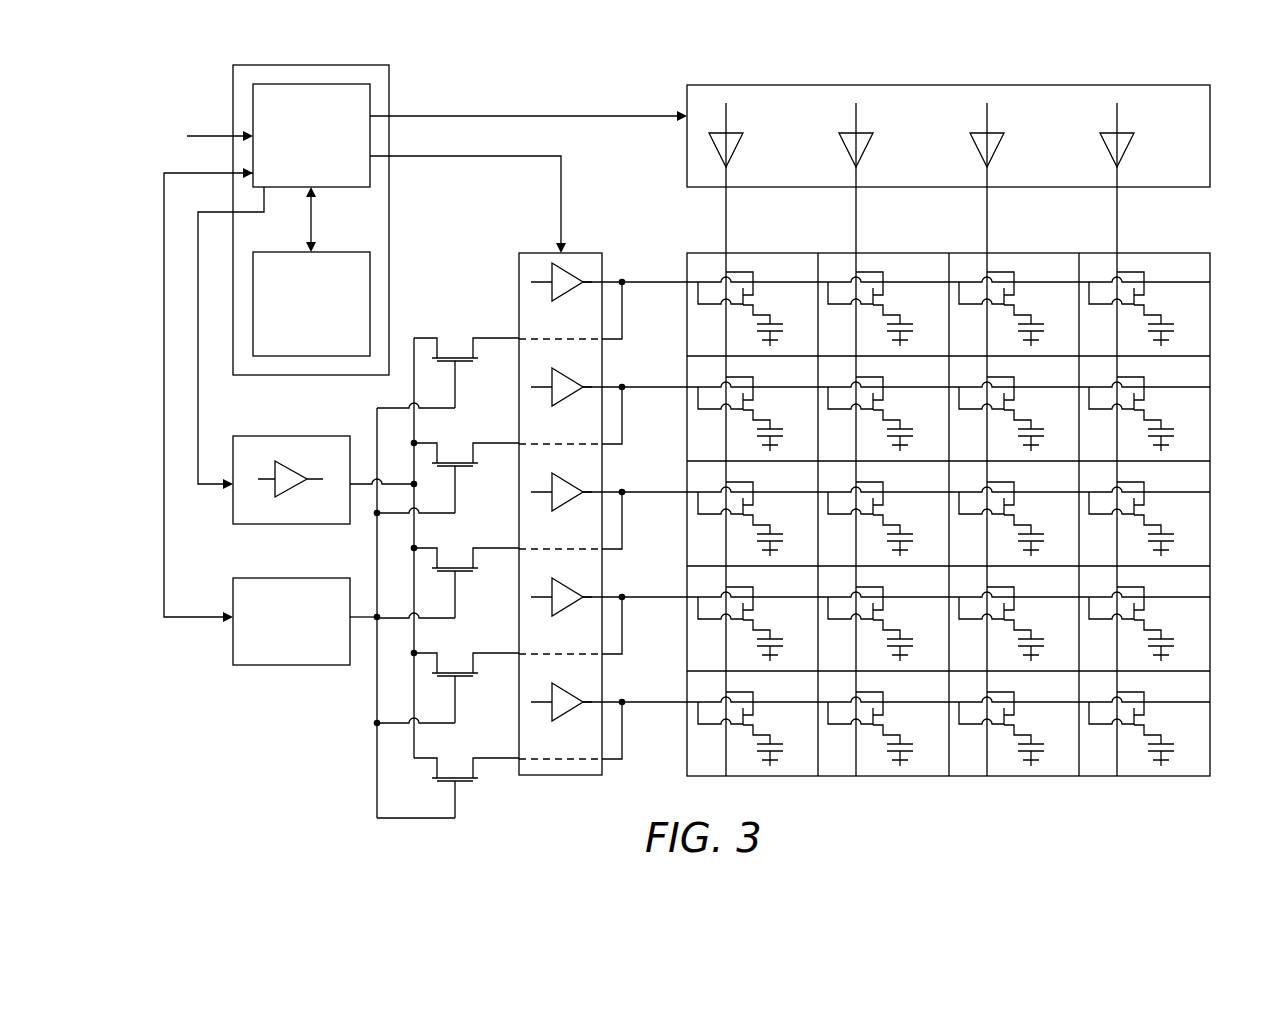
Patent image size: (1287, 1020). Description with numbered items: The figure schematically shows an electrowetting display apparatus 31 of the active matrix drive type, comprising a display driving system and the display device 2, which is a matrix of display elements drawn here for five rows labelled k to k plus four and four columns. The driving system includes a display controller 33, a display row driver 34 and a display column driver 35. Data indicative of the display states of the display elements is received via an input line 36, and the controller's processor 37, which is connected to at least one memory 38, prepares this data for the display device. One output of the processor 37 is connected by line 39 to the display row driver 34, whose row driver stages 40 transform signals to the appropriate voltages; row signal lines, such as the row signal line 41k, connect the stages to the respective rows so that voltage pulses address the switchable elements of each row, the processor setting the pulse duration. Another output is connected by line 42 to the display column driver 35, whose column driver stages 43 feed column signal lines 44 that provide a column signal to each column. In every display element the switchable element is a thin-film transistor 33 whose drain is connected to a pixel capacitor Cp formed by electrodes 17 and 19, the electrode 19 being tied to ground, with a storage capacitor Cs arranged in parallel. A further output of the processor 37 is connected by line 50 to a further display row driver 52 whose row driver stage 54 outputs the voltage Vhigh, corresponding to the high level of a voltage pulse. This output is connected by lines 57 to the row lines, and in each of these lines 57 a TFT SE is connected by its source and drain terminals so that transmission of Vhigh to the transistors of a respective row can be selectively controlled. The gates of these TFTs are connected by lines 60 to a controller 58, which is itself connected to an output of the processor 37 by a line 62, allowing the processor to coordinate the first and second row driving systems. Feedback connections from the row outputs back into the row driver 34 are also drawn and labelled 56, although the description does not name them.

The display device 2 is at (1210, 262).
The electrode 17 is at (775, 433).
The electrode 19 is at (781, 444).
The electrowetting display apparatus 31 is at (689, 465).
The display controller 33 is at (389, 78).
The display row driver 34 is at (519, 264).
The display column driver 35 is at (1210, 92).
The input line 36 is at (210, 131).
The processor 37 is at (350, 188).
The memory 38 is at (370, 265).
The line 39 is at (455, 158).
The row driver stage 40 is at (578, 262).
The row signal line 41k is at (594, 280).
The line 42 is at (520, 113).
The column driver stage 43 is at (710, 148).
The column signal line 44 is at (724, 223).
The line 50 is at (198, 400).
The further display row driver 52 is at (252, 525).
The row driver stage 54 is at (294, 462).
The row driver feedback line 56 is at (622, 330).
The lines 57 is at (428, 338).
The controller 58 is at (252, 666).
The lines 60 is at (393, 410).
The line 62 is at (164, 605).